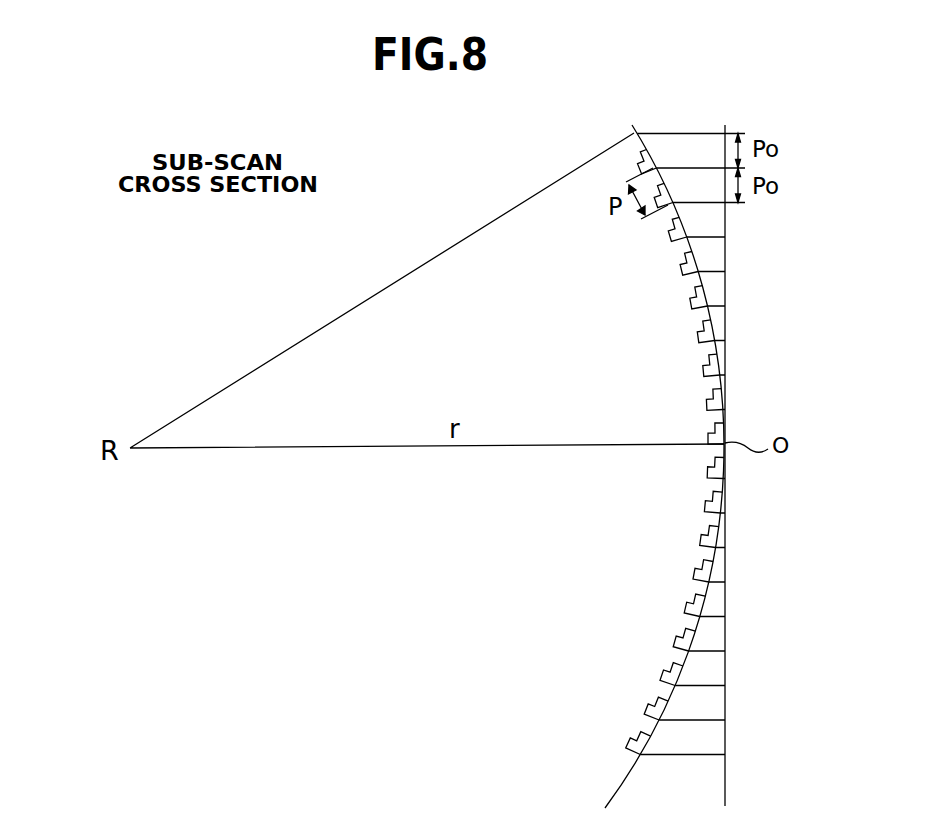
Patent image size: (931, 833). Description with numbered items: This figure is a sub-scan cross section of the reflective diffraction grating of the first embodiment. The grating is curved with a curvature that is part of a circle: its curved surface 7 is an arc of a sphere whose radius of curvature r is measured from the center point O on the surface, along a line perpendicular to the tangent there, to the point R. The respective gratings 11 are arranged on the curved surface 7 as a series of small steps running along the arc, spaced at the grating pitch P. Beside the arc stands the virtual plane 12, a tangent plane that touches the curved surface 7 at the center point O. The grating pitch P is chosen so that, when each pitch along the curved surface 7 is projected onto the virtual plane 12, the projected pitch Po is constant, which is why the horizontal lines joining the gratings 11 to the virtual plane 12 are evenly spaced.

The curved surface 7 is at (620, 787).
The gratings 11 is at (630, 746).
The virtual plane 12 is at (727, 733).